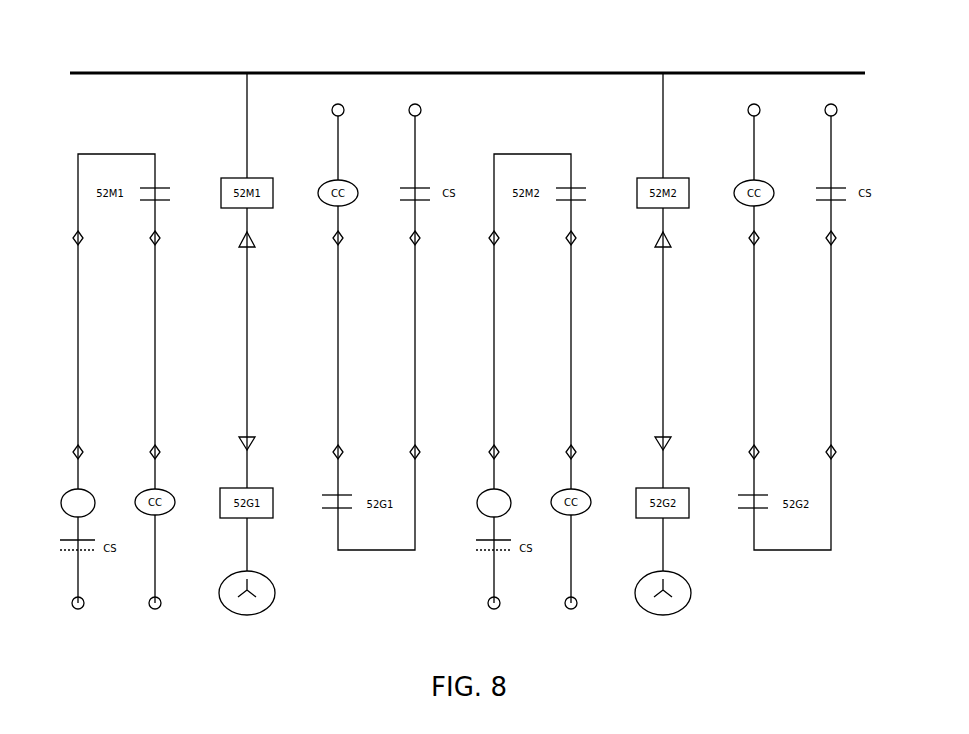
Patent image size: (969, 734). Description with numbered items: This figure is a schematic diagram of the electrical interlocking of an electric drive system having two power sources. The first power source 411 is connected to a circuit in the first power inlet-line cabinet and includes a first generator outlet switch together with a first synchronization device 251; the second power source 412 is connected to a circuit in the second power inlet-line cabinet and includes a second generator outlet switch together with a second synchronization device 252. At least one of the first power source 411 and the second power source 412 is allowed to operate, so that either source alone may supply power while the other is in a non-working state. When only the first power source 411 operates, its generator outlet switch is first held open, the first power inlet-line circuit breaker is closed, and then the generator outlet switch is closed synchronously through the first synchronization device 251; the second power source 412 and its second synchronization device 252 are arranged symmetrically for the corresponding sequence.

The first synchronization device 251 is at (78, 503).
The second synchronization device 252 is at (494, 503).
The first power source 411 is at (236, 613).
The second power source 412 is at (661, 613).